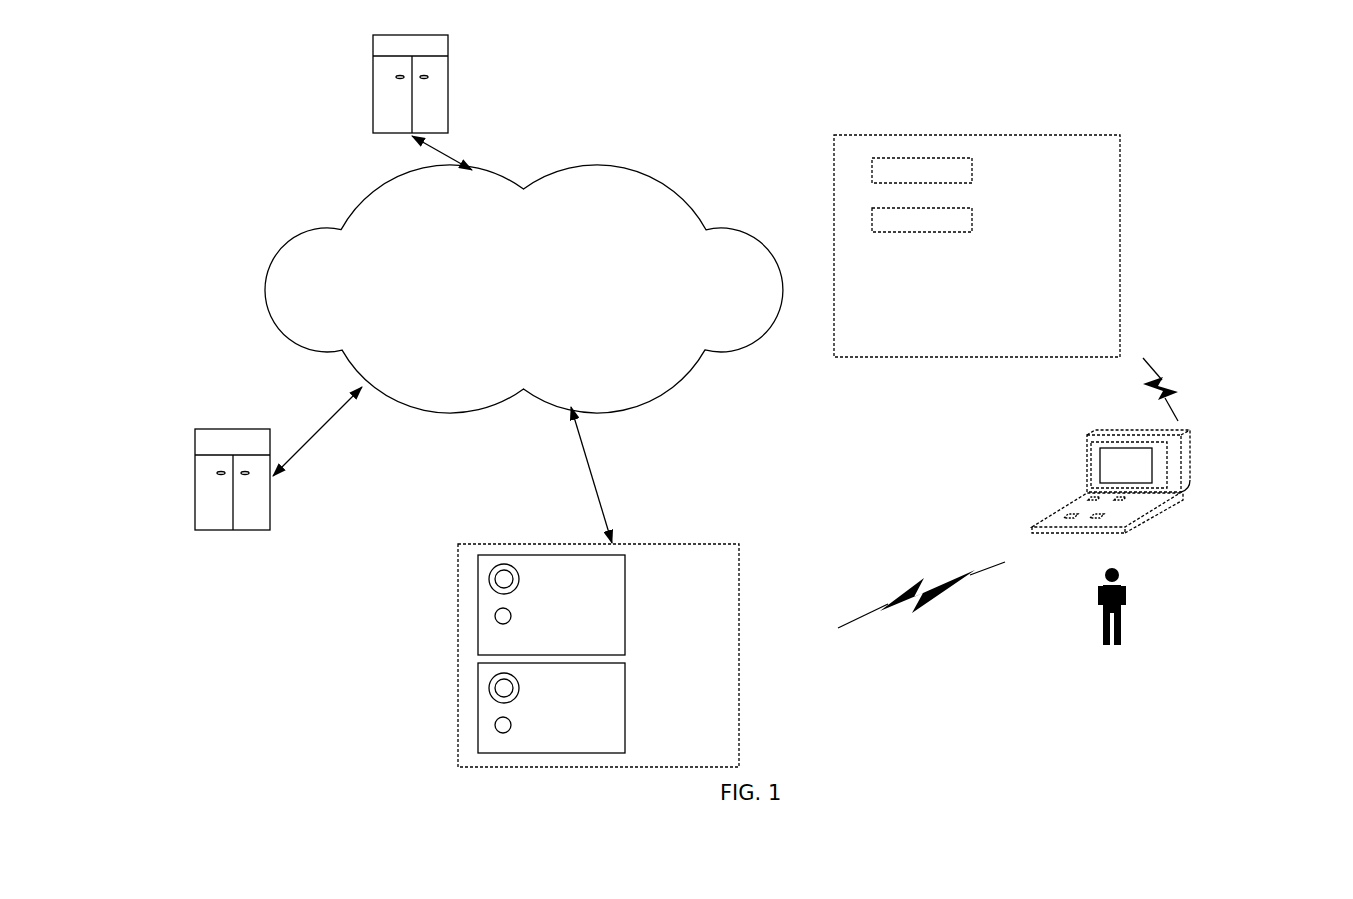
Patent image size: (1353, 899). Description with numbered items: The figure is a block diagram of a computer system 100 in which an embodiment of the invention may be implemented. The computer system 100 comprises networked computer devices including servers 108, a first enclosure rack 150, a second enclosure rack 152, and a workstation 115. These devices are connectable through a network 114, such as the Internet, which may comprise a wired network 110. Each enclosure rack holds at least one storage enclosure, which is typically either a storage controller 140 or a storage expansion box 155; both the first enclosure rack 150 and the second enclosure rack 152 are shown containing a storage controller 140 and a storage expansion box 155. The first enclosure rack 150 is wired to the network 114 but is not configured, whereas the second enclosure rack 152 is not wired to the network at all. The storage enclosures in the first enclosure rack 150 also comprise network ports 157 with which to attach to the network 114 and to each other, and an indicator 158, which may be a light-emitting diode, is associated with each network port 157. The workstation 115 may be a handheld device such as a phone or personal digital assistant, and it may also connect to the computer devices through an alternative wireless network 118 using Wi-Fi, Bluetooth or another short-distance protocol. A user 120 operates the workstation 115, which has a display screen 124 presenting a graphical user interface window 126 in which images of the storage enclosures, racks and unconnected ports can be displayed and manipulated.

The computer system 100 is at (1042, 108).
The servers 108 is at (449, 83).
The wired network 110 is at (434, 147).
The network 114 is at (278, 262).
The workstation 115 is at (1140, 527).
The alternative wireless network 118 is at (1165, 372).
The user 120 is at (1098, 618).
The display screen 124 is at (1167, 468).
The graphical user interface window 126 is at (1102, 465).
The storage controller 140 is at (625, 578).
The first enclosure rack 150 is at (739, 646).
The second enclosure rack 152 is at (1120, 238).
The storage expansion box 155 is at (625, 678).
The network ports 157 is at (489, 573).
The indicator 158 is at (495, 612).